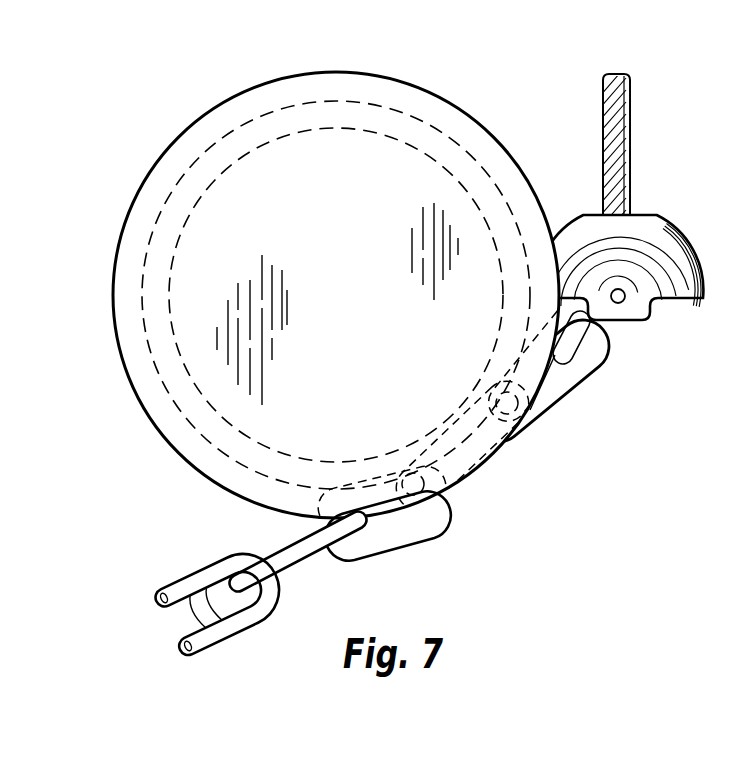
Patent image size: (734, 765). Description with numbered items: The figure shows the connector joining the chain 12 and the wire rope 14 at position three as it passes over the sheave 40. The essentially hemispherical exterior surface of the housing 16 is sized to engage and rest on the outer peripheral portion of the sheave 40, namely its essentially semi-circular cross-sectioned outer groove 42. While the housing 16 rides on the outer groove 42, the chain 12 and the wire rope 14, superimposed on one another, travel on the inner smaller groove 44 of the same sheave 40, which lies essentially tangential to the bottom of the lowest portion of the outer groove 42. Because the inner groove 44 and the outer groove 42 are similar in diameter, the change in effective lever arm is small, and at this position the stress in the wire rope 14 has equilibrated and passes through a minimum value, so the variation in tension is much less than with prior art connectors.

The sheave 40 is at (186, 128).
The outer groove 42 is at (243, 125).
The inner smaller groove 44 is at (285, 137).
The wire rope 14 is at (622, 118).
The housing 16 is at (662, 245).
The chain 12 is at (577, 375).